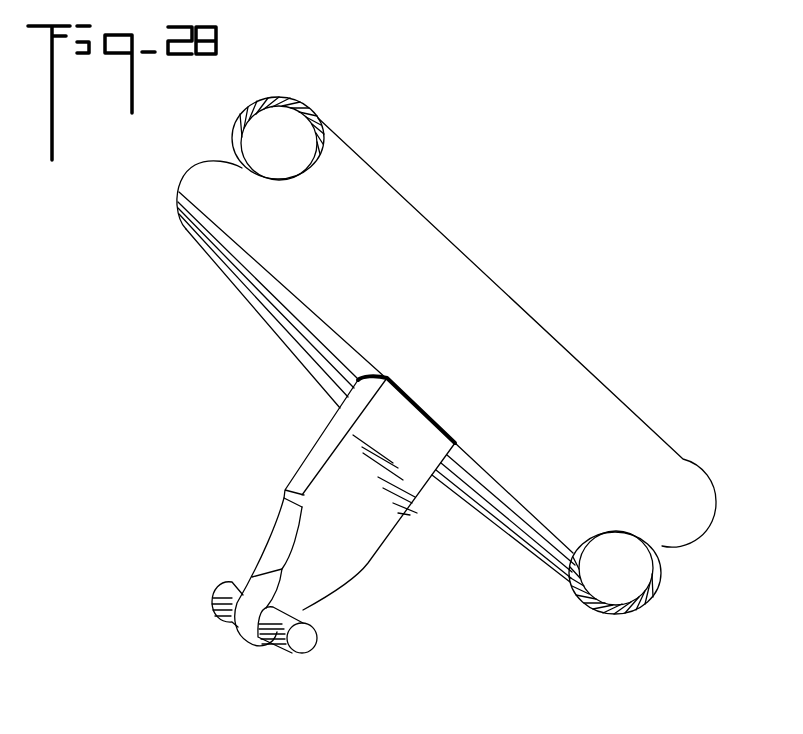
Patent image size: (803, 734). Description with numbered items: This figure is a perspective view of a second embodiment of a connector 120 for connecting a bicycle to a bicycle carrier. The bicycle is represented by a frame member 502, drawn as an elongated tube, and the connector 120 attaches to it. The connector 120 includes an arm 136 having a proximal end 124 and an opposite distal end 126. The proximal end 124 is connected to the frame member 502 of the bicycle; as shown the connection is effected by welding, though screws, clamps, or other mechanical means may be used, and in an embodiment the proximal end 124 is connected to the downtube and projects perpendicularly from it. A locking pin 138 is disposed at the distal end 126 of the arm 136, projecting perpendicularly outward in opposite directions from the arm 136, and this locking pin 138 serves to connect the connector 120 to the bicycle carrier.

The frame member 502 is at (495, 323).
The connector 120 is at (329, 519).
The proximal end 124 is at (418, 418).
The arm 136 is at (345, 546).
The distal end 126 is at (252, 630).
The locking pin 138 is at (298, 634).